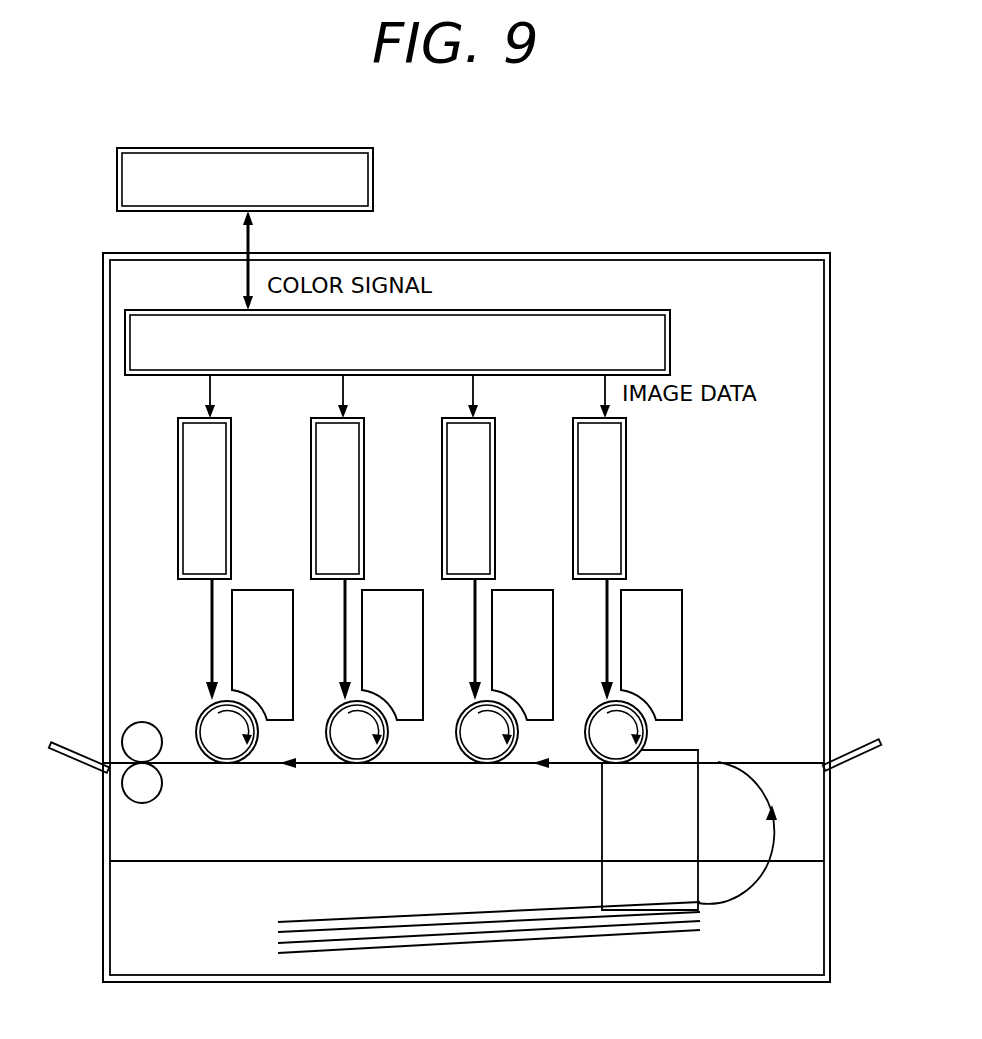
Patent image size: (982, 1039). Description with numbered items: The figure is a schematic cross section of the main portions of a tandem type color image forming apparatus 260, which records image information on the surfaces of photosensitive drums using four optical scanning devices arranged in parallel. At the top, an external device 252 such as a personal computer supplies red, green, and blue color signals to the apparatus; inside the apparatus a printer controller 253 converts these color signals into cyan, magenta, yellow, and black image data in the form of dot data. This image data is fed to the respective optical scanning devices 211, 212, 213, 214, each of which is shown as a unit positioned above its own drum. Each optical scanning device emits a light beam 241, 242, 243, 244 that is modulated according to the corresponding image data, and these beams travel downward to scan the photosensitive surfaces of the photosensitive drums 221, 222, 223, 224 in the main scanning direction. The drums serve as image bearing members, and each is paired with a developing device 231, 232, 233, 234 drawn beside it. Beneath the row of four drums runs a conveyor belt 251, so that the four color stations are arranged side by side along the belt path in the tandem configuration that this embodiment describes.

The external device 252 is at (373, 182).
The printer controller 253 is at (670, 336).
The color image forming apparatus 260 is at (727, 250).
The optical scanning device 211 is at (190, 462).
The optical scanning device 212 is at (323, 462).
The optical scanning device 213 is at (454, 462).
The optical scanning device 214 is at (583, 462).
The photosensitive drum 221 is at (223, 753).
The photosensitive drum 222 is at (353, 753).
The photosensitive drum 223 is at (483, 753).
The photosensitive drum 224 is at (625, 749).
The developing device 231 is at (262, 598).
The developing device 232 is at (395, 598).
The developing device 233 is at (527, 598).
The developing device 234 is at (658, 598).
The light beam 241 is at (193, 639).
The light beam 242 is at (327, 639).
The light beam 243 is at (457, 639).
The light beam 244 is at (588, 639).
The conveyor belt 251 is at (748, 763).